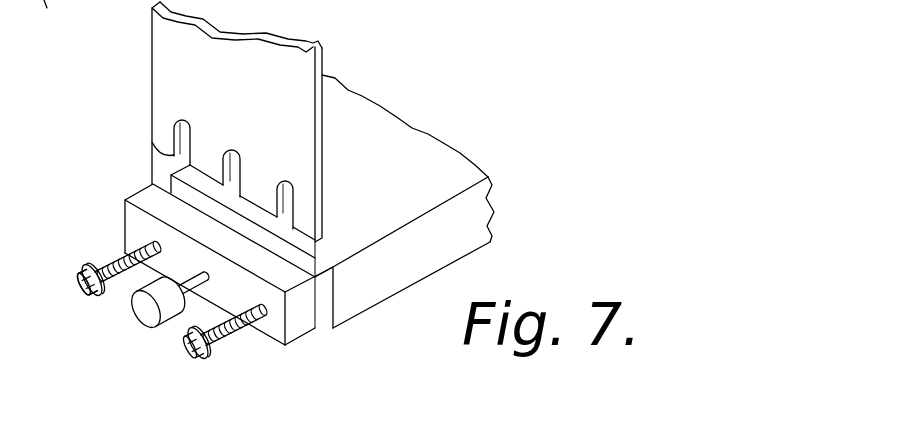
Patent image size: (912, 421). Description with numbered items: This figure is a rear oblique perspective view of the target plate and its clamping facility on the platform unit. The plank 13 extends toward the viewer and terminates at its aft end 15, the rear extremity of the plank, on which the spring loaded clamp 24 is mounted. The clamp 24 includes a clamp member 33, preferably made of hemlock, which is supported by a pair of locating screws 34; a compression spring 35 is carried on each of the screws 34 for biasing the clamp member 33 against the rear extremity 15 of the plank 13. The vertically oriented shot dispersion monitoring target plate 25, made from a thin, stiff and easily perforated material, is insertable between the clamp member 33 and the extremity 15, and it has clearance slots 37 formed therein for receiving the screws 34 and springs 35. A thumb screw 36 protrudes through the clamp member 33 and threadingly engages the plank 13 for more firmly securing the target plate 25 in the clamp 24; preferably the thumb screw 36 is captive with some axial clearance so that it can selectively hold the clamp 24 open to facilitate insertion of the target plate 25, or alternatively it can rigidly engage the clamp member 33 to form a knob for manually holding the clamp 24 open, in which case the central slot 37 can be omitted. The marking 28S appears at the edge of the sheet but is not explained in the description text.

The plank 13 is at (458, 260).
The aft end 15 is at (322, 330).
The spring loaded clamp 24 is at (356, 342).
The target plate 25 is at (188, 98).
The sensor 28S is at (24, 20).
The clamp member 33 is at (124, 203).
The locating screws 34 is at (80, 287).
The compression spring 35 is at (120, 250).
The thumb screw 36 is at (145, 318).
The clearance slots 37 is at (288, 181).